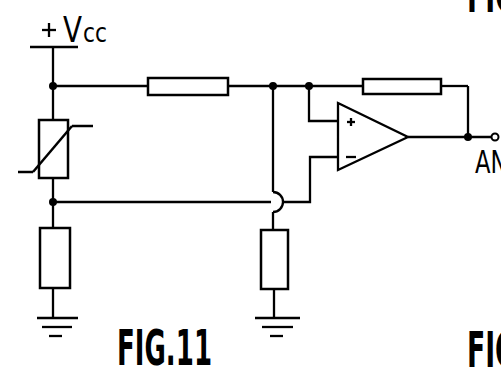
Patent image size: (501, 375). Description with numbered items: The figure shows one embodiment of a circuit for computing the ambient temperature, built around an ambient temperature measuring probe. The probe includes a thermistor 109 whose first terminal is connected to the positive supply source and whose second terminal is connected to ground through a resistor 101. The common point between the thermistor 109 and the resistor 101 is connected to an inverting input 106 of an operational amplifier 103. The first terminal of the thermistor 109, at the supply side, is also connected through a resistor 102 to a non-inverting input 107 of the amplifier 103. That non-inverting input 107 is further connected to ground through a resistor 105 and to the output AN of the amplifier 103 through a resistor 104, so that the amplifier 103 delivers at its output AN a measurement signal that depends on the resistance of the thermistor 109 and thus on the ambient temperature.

The resistor 101 is at (70, 263).
The resistor 102 is at (213, 78).
The operational amplifier 103 is at (373, 142).
The resistor 104 is at (410, 78).
The resistor 105 is at (288, 262).
The inverting input 106 is at (327, 158).
The non-inverting input 107 is at (309, 106).
The thermistor 109 is at (68, 153).